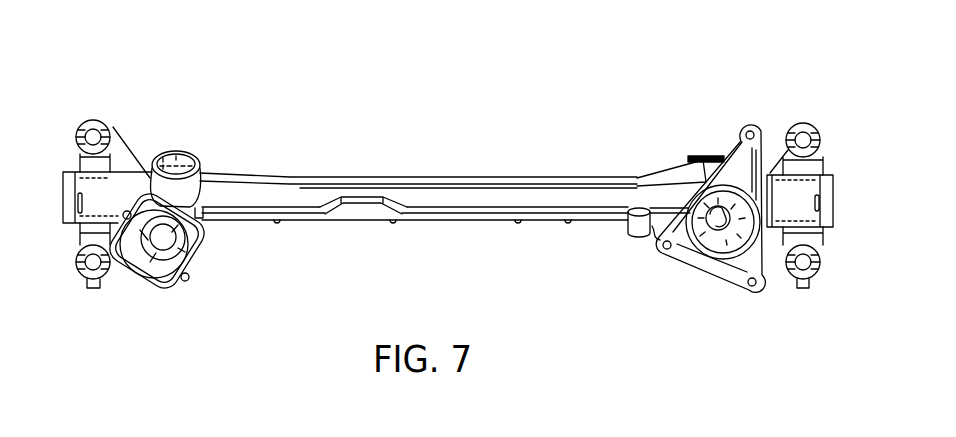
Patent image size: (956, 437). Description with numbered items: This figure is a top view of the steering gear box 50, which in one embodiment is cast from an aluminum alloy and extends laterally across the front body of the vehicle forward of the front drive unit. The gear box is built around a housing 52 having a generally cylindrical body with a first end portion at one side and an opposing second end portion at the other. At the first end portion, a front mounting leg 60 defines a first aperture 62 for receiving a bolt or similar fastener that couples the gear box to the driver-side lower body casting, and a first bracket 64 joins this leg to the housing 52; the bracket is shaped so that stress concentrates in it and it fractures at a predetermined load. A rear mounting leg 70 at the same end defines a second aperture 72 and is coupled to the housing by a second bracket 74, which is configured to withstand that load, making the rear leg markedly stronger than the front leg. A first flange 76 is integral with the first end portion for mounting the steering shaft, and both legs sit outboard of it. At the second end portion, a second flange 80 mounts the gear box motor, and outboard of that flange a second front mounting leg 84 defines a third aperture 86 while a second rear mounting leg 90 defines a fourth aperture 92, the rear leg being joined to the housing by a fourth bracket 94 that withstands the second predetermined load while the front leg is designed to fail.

The steering gear box 50 is at (468, 127).
The housing 52 is at (505, 195).
The front mounting leg 60 is at (81, 124).
The first aperture 62 is at (98, 133).
The first bracket 64 is at (117, 168).
The rear mounting leg 70 is at (87, 280).
The second aperture 72 is at (99, 266).
The second bracket 74 is at (97, 232).
The first flange 76 is at (153, 268).
The second flange 80 is at (730, 266).
The second front mounting leg 84 is at (814, 134).
The third aperture 86 is at (801, 137).
The second rear mounting leg 90 is at (808, 279).
The fourth aperture 92 is at (802, 263).
The fourth bracket 94 is at (787, 233).